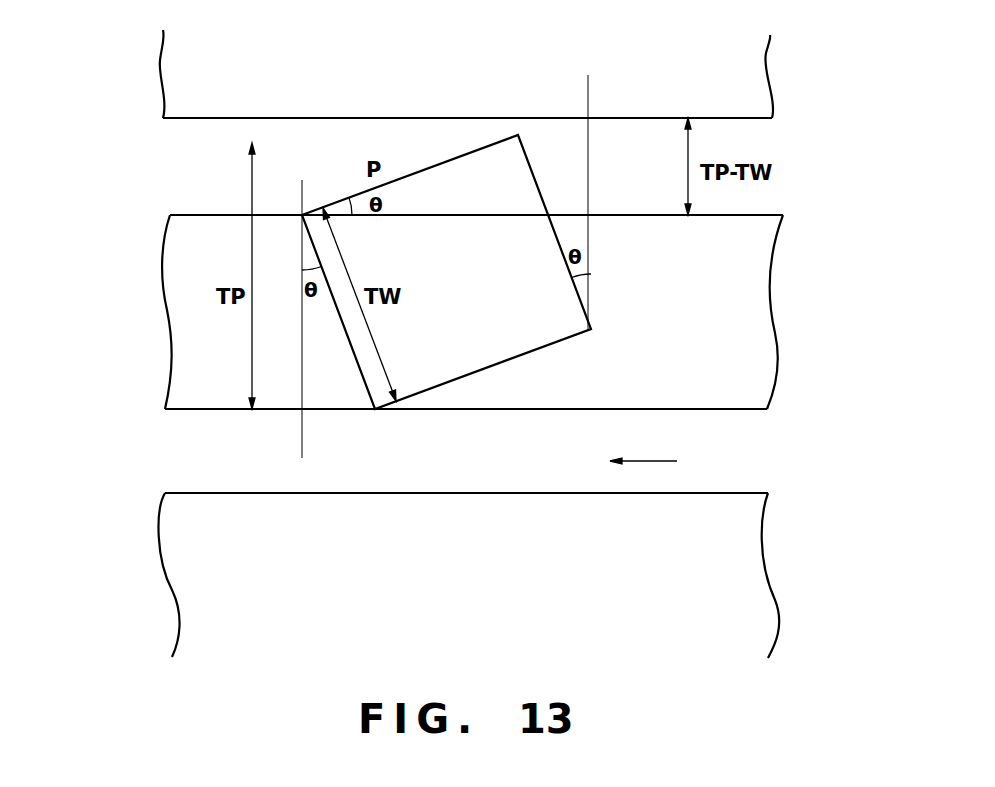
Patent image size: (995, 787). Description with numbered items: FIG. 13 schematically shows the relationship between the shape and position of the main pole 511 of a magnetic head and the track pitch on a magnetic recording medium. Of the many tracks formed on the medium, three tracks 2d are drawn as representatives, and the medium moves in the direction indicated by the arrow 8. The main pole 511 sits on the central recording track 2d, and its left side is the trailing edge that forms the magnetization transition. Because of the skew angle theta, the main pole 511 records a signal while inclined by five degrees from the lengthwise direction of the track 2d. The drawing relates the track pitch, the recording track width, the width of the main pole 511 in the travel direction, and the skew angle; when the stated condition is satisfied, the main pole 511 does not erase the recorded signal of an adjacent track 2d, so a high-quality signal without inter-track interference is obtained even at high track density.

The track 2d is at (195, 108).
The main pole 511 is at (442, 178).
The arrow indicating moving direction 8 is at (652, 462).